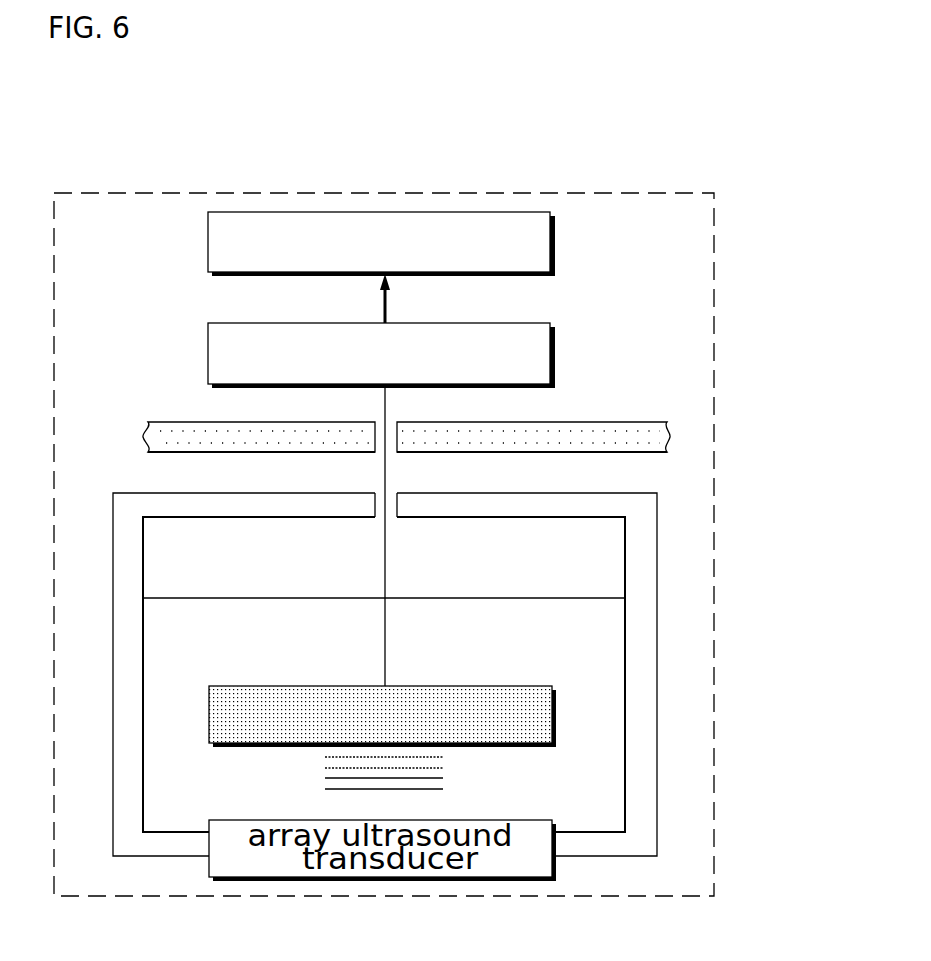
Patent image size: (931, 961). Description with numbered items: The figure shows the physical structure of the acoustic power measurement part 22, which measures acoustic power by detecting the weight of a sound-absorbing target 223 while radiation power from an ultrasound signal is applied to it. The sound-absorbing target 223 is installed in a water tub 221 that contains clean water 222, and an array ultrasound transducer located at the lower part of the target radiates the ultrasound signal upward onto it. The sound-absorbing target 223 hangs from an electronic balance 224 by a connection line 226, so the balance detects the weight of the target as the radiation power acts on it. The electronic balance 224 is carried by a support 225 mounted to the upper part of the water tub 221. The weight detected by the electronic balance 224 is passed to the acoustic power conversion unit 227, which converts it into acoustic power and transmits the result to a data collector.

The acoustic power measurement part 22 is at (601, 193).
The water tub 221 is at (657, 655).
The clean water 222 is at (600, 623).
The sound-absorbing target 223 is at (555, 716).
The electronic balance 224 is at (556, 352).
The support 225 is at (668, 433).
The connection line 226 is at (385, 559).
The acoustic power conversion unit 227 is at (556, 243).